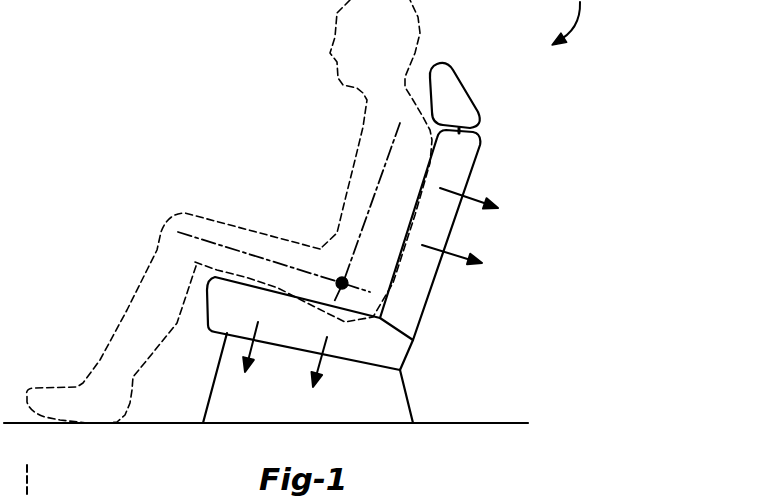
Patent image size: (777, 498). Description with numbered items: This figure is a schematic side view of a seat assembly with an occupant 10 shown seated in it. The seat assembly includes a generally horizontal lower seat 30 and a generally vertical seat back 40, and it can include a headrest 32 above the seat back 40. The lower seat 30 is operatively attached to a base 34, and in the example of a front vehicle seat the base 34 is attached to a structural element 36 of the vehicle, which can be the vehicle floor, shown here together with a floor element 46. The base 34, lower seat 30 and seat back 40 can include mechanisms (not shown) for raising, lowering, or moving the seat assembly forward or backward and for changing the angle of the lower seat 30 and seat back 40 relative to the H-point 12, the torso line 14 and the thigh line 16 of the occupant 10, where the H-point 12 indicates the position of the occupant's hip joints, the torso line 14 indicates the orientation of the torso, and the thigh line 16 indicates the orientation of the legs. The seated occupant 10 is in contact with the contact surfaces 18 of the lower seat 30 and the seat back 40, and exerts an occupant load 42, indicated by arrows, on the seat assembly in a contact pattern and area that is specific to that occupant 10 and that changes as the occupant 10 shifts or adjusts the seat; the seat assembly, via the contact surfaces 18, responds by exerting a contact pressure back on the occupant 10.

The occupant 10 is at (298, 60).
The H-point 12 is at (342, 283).
The torso line 14 is at (378, 177).
The thigh line 16 is at (217, 245).
The contact surfaces 18 is at (410, 200).
The lower seat 30 is at (415, 350).
The headrest 32 is at (465, 90).
The base 34 is at (410, 403).
The structural element 36 is at (502, 423).
The seat back 40 is at (452, 227).
The occupant load 42 is at (478, 195).
The floor element 46 is at (45, 495).